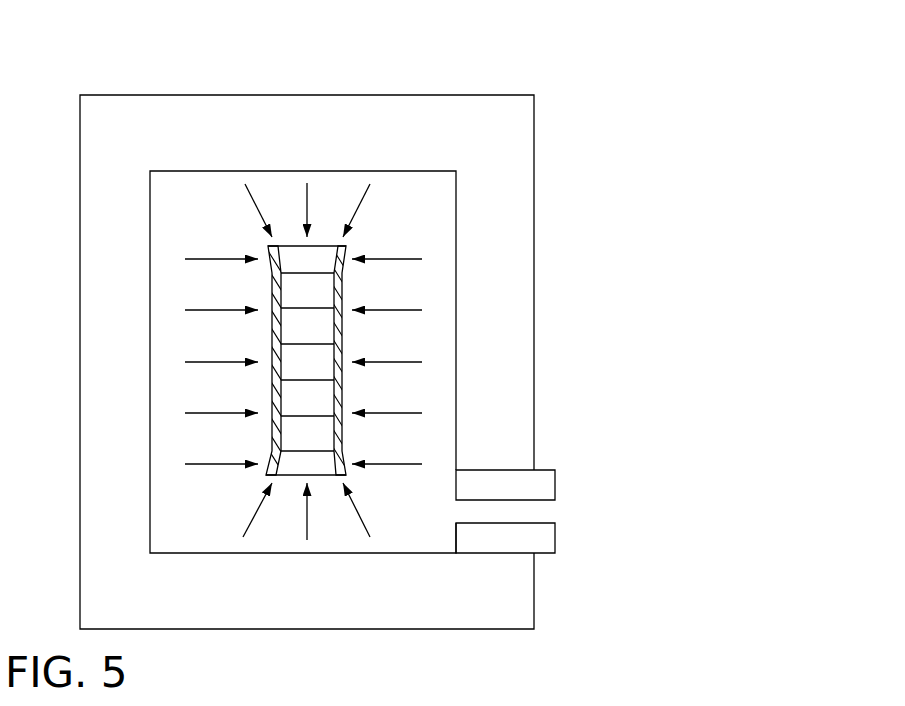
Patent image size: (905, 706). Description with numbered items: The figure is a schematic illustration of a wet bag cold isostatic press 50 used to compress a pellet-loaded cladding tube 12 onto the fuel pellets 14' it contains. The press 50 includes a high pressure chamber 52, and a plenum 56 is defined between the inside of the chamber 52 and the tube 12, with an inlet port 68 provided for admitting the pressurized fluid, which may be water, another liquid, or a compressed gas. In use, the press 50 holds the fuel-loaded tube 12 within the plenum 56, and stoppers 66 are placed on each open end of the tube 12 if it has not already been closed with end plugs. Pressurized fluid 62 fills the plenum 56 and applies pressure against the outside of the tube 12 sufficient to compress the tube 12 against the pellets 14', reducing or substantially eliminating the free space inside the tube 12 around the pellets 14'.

The wet bag cold isostatic press 50 is at (468, 75).
The high pressure chamber 52 is at (502, 210).
The plenum 56 is at (210, 240).
The gas flow 62 is at (390, 362).
The stoppers 66 is at (292, 267).
The inlet port 68 is at (512, 512).
The cladding tube 12 is at (278, 386).
The pellets 14' is at (168, 398).